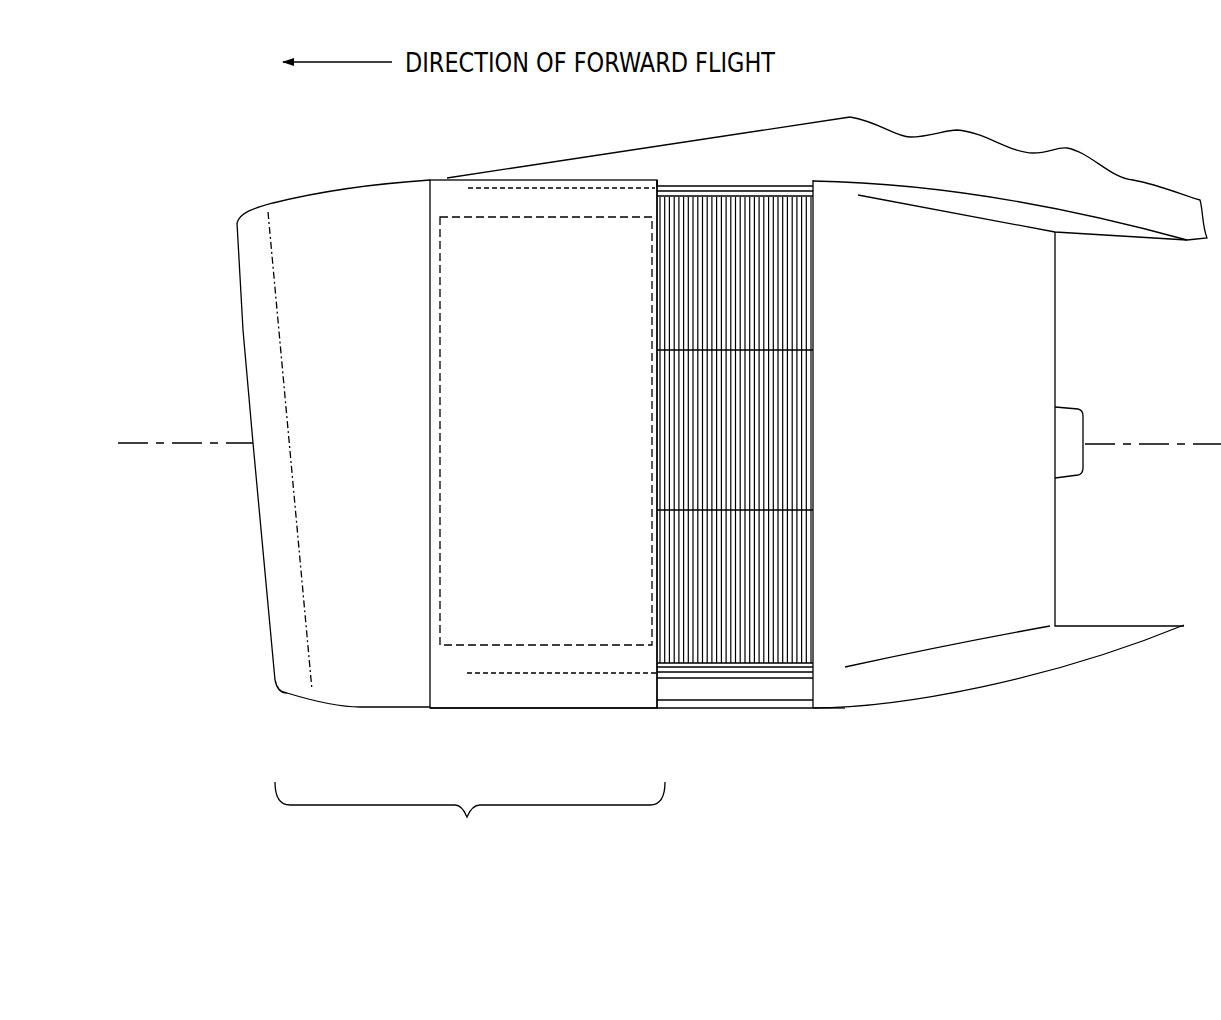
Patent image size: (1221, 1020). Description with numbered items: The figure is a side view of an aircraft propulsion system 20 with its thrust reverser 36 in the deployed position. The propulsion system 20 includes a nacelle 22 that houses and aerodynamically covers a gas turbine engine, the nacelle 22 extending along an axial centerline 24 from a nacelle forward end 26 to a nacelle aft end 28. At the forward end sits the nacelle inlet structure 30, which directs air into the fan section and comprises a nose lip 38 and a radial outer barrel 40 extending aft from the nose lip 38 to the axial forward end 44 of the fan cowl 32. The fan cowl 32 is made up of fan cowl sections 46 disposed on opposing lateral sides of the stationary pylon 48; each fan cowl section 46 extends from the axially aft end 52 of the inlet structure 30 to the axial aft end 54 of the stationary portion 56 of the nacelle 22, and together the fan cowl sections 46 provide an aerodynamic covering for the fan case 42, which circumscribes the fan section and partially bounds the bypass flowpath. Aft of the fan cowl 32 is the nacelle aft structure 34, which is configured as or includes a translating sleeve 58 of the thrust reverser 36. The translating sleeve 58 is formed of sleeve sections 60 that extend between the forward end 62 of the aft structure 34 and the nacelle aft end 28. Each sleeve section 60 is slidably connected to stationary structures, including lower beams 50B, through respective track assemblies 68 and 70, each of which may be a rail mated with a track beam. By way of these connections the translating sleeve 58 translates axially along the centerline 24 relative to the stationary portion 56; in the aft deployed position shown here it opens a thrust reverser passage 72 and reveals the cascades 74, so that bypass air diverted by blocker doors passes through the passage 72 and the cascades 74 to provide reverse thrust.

The aircraft propulsion system 20 is at (178, 168).
The nacelle 22 is at (311, 186).
The axial centerline 24 is at (123, 443).
The nacelle forward end 26 is at (238, 262).
The nacelle aft end 28 is at (1057, 258).
The nacelle inlet structure 30 is at (358, 711).
The fan cowl 32 is at (528, 714).
The nacelle aft structure 34 is at (909, 718).
The thrust reverser 36 is at (806, 724).
The nose lip 38 is at (288, 690).
The radial outer barrel 40 is at (402, 697).
The fan case 42 is at (585, 648).
The axial forward end of the fan cowl 44 is at (425, 197).
The fan cowl sections 46 is at (455, 697).
The pylon 48 is at (610, 142).
The lower beams 50B is at (710, 705).
The axially aft end of the inlet structure 52 is at (433, 188).
The axial aft end of the stationary portion 54 is at (668, 182).
The stationary portion of the nacelle 56 is at (470, 818).
The translating sleeve 58 is at (1042, 577).
The sleeve sections 60 is at (1069, 442).
The forward end of the aft structure 62 is at (812, 208).
The track assembly 68 is at (732, 185).
The track assembly 70 is at (688, 678).
The thrust reverser passage 72 is at (748, 689).
The cascades 74 is at (793, 288).